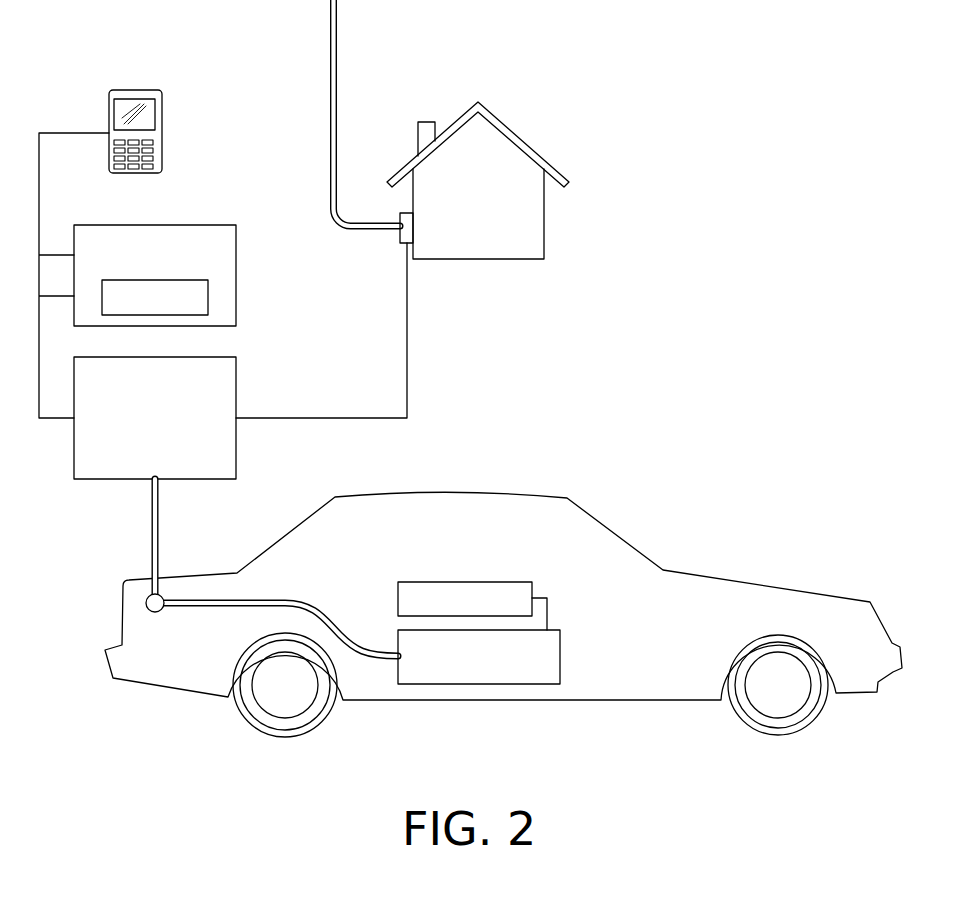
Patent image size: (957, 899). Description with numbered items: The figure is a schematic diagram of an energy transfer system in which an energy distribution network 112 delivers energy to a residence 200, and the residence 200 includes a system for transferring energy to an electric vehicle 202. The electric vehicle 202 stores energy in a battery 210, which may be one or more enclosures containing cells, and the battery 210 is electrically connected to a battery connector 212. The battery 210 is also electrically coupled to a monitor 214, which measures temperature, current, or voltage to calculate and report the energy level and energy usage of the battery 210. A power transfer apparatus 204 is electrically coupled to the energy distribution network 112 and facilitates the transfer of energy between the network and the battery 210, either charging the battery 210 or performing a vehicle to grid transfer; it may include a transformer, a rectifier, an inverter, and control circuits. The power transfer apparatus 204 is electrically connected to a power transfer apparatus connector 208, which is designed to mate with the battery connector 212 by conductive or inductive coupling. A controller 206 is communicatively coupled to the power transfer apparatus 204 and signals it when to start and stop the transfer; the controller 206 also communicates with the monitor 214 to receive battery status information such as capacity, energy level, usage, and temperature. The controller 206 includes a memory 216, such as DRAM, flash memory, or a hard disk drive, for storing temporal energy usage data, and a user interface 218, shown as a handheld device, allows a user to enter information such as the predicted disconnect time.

The energy distribution network 112 is at (337, 34).
The residence 200 is at (502, 259).
The electric vehicle 202 is at (603, 521).
The power transfer apparatus 204 is at (236, 440).
The controller 206 is at (236, 250).
The power transfer apparatus connector 208 is at (229, 578).
The battery 210 is at (560, 653).
The battery connector 212 is at (160, 612).
The monitor 214 is at (430, 582).
The memory 216 is at (208, 297).
The user interface 218 is at (127, 88).